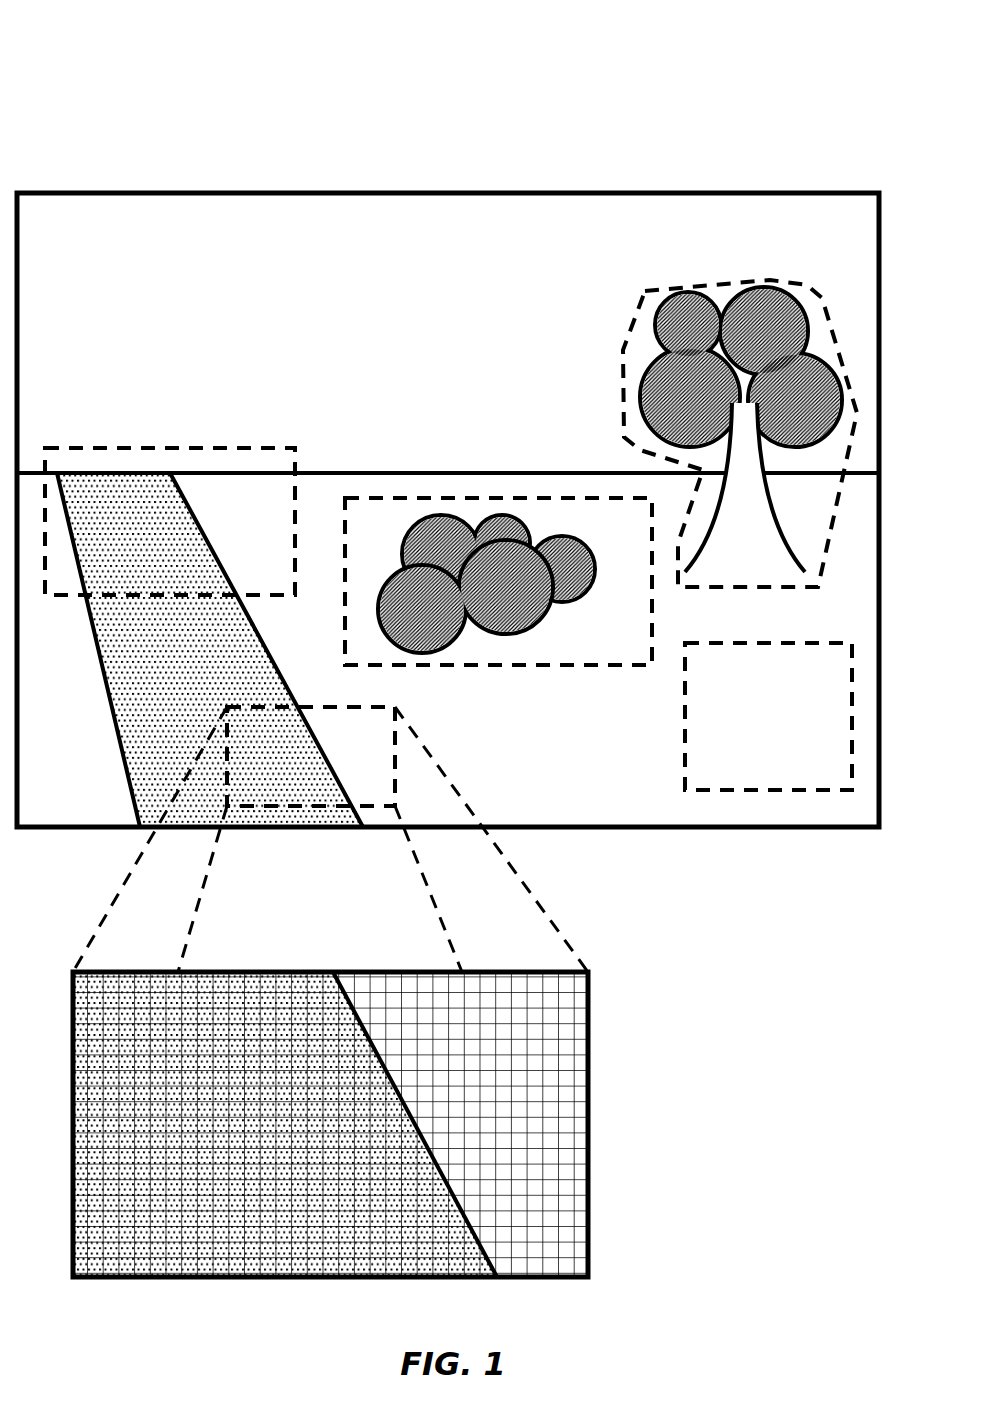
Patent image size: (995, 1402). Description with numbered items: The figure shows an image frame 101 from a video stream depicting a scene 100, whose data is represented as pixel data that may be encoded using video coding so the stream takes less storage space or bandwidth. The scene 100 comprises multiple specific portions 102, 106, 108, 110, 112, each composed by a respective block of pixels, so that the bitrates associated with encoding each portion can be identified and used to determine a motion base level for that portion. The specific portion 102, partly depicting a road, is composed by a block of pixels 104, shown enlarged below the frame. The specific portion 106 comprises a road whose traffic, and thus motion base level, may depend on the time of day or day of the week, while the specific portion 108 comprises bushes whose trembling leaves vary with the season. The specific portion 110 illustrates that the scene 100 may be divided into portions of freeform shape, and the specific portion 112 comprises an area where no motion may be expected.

The scene 100 is at (133, 165).
The image frame 101 is at (297, 193).
The specific portion 102 is at (393, 745).
The block of pixels 104 is at (607, 1098).
The specific portion 106 is at (125, 447).
The specific portion 108 is at (377, 498).
The specific portion 110 is at (633, 312).
The specific portion 112 is at (737, 790).